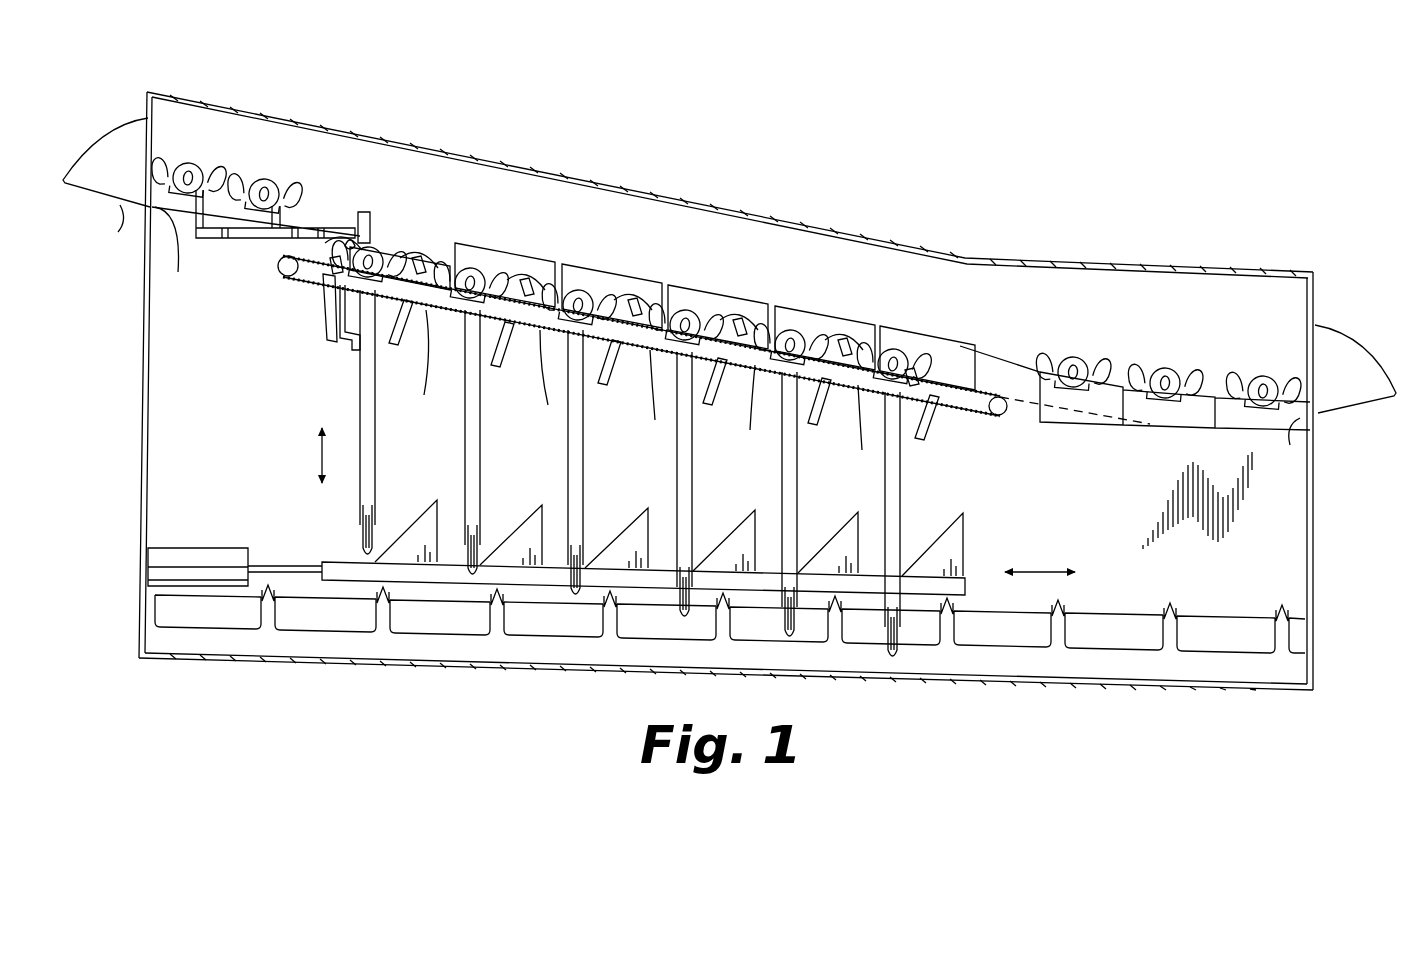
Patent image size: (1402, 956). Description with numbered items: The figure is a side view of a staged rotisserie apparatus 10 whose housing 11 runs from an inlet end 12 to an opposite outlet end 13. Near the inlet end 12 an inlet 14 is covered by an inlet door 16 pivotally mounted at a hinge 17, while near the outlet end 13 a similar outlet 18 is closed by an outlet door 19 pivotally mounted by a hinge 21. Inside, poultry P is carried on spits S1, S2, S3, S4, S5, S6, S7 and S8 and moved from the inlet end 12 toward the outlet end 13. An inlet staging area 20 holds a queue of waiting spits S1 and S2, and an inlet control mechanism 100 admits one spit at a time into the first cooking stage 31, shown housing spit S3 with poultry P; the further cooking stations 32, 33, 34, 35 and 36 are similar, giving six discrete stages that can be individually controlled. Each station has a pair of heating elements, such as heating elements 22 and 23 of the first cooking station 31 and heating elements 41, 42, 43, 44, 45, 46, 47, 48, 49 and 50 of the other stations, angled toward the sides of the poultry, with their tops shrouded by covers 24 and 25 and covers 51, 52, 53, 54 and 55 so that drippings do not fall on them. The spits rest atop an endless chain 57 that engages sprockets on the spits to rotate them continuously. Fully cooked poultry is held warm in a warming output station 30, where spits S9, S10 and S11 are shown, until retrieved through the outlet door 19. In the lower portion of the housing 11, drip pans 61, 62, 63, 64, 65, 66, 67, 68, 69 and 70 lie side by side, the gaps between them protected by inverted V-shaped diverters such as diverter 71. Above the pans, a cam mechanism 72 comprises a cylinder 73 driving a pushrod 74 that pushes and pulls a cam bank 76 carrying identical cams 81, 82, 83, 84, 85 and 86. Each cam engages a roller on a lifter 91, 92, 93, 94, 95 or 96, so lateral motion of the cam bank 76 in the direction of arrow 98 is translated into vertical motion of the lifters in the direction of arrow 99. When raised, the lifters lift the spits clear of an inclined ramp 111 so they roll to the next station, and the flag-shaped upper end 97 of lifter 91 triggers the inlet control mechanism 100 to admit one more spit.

The staged rotisserie apparatus 10 is at (726, 352).
The housing 11 is at (955, 258).
The inlet end 12 is at (150, 64).
The outlet end 13 is at (1315, 255).
The inlet 14 is at (90, 116).
The inlet door 16 is at (118, 232).
The hinge 17 is at (171, 253).
The outlet 18 is at (1342, 325).
The outlet door 19 is at (1365, 412).
The inlet staging area 20 is at (228, 148).
The hinge 21 is at (1285, 447).
The heating element 22 is at (331, 343).
The heating element 23 is at (397, 346).
The cover 24 is at (272, 264).
The cover 25 is at (412, 262).
The warming output station 30 is at (1117, 302).
The first cooking stage 31 is at (368, 195).
The cooking station 32 is at (480, 192).
The cooking station 33 is at (592, 215).
The cooking station 34 is at (693, 237).
The cooking station 35 is at (797, 253).
The cooking station 36 is at (897, 270).
The heating element 41 is at (428, 396).
The heating element 42 is at (499, 368).
The heating element 43 is at (548, 405).
The heating element 44 is at (605, 386).
The heating element 45 is at (655, 421).
The heating element 46 is at (710, 406).
The heating element 47 is at (750, 431).
The heating element 48 is at (814, 426).
The heating element 49 is at (862, 451).
The heating element 50 is at (928, 441).
The cover 51 is at (524, 247).
The cover 52 is at (627, 300).
The cover 53 is at (734, 282).
The cover 54 is at (832, 333).
The cover 55 is at (938, 348).
The endless chain 57 is at (1000, 415).
The drip pan 61 is at (223, 620).
The drip pan 62 is at (345, 624).
The drip pan 63 is at (456, 627).
The drip pan 64 is at (570, 630).
The drip pan 65 is at (672, 633).
The drip pan 66 is at (800, 636).
The drip pan 67 is at (915, 639).
The drip pan 68 is at (1010, 642).
The drip pan 69 is at (1122, 645).
The drip pan 70 is at (1227, 648).
The diverter 71 is at (276, 590).
The cam mechanism 72 is at (222, 502).
The cylinder 73 is at (205, 547).
The pushrod 74 is at (278, 565).
The cam bank 76 is at (968, 582).
The cam 81 is at (405, 535).
The cam 82 is at (510, 538).
The cam 83 is at (612, 540).
The cam 84 is at (718, 542).
The cam 85 is at (830, 545).
The cam 86 is at (925, 545).
The lifter 91 is at (360, 503).
The lifter 92 is at (464, 490).
The lifter 93 is at (570, 470).
The lifter 94 is at (678, 472).
The lifter 95 is at (783, 472).
The lifter 96 is at (905, 497).
The upper end of lifter 97 is at (346, 352).
The direction arrow 98 is at (1040, 572).
The direction arrow 99 is at (320, 455).
The inlet control mechanism 100 is at (312, 185).
The inclined ramp 111 is at (1026, 352).
The poultry P is at (396, 233).
The spit S1 is at (188, 163).
The spit S2 is at (264, 180).
The spit S3 is at (355, 278).
The spit S4 is at (470, 266).
The spit S5 is at (578, 288).
The spit S6 is at (685, 308).
The spit S7 is at (790, 328).
The spit S8 is at (893, 348).
The station S9 is at (1073, 357).
The station S10 is at (1166, 370).
The station S11 is at (1263, 378).